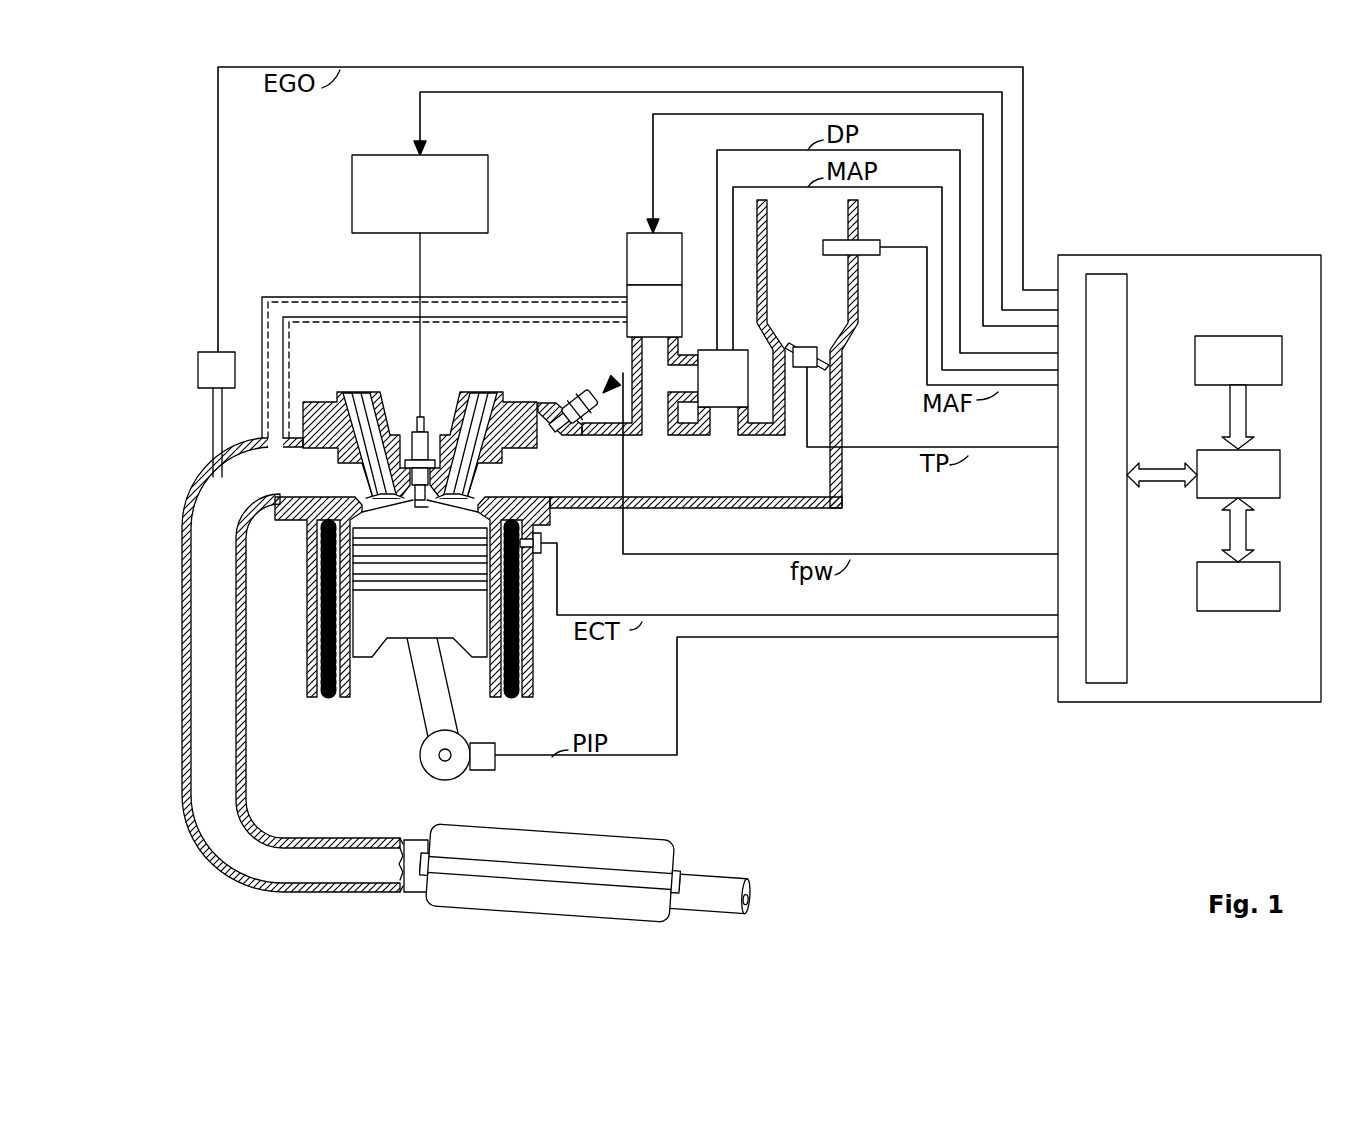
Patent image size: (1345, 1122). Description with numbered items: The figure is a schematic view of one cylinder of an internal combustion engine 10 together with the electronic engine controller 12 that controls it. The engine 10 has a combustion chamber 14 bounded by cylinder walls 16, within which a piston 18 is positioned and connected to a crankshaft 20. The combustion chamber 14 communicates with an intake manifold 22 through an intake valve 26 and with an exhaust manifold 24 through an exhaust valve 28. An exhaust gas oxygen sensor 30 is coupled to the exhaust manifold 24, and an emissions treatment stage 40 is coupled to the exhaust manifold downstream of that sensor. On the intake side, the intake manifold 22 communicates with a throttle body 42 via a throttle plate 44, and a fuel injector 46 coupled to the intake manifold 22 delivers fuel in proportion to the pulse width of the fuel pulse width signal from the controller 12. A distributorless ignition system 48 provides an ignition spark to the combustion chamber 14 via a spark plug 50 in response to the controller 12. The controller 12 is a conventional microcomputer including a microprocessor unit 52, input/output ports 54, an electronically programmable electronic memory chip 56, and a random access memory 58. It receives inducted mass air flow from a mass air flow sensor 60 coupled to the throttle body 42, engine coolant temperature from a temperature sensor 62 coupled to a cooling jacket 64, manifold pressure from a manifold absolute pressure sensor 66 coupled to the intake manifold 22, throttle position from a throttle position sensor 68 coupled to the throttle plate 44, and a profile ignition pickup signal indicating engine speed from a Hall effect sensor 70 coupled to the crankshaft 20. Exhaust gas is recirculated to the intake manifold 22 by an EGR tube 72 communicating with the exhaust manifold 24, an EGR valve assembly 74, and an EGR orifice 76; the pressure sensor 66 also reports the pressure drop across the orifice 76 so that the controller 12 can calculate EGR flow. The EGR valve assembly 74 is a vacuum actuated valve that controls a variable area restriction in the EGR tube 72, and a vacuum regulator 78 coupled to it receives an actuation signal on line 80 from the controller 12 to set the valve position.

The internal combustion engine 10 is at (337, 787).
The electronic engine controller 12 is at (1276, 255).
The combustion chamber 14 is at (410, 513).
The cylinder walls 16 is at (352, 700).
The piston 18 is at (420, 628).
The crankshaft 20 is at (447, 770).
The intake manifold 22 is at (794, 482).
The exhaust manifold 24 is at (218, 507).
The intake valve 26 is at (447, 488).
The exhaust valve 28 is at (362, 488).
The exhaust gas oxygen sensor 30 is at (200, 348).
The emissions treatment stage 40 is at (633, 840).
The throttle body 42 is at (850, 224).
The throttle plate 44 is at (798, 348).
The fuel injector 46 is at (572, 405).
The distributorless ignition system 48 is at (445, 155).
The spark plug 50 is at (432, 425).
The microprocessor unit 52 is at (1262, 450).
The input/output ports 54 is at (1130, 322).
The electronic memory chip 56 is at (1230, 338).
The random access memory 58 is at (1262, 563).
The mass air flow sensor 60 is at (862, 254).
The temperature sensor 62 is at (541, 540).
The cooling jacket 64 is at (513, 660).
The manifold absolute pressure sensor 66 is at (739, 392).
The throttle position sensor 68 is at (806, 345).
The Hall effect sensor 70 is at (480, 740).
The EGR tube 72 is at (313, 300).
The EGR valve assembly 74 is at (671, 324).
The EGR orifice 76 is at (662, 405).
The vacuum regulator 78 is at (671, 272).
The line 80 is at (648, 138).